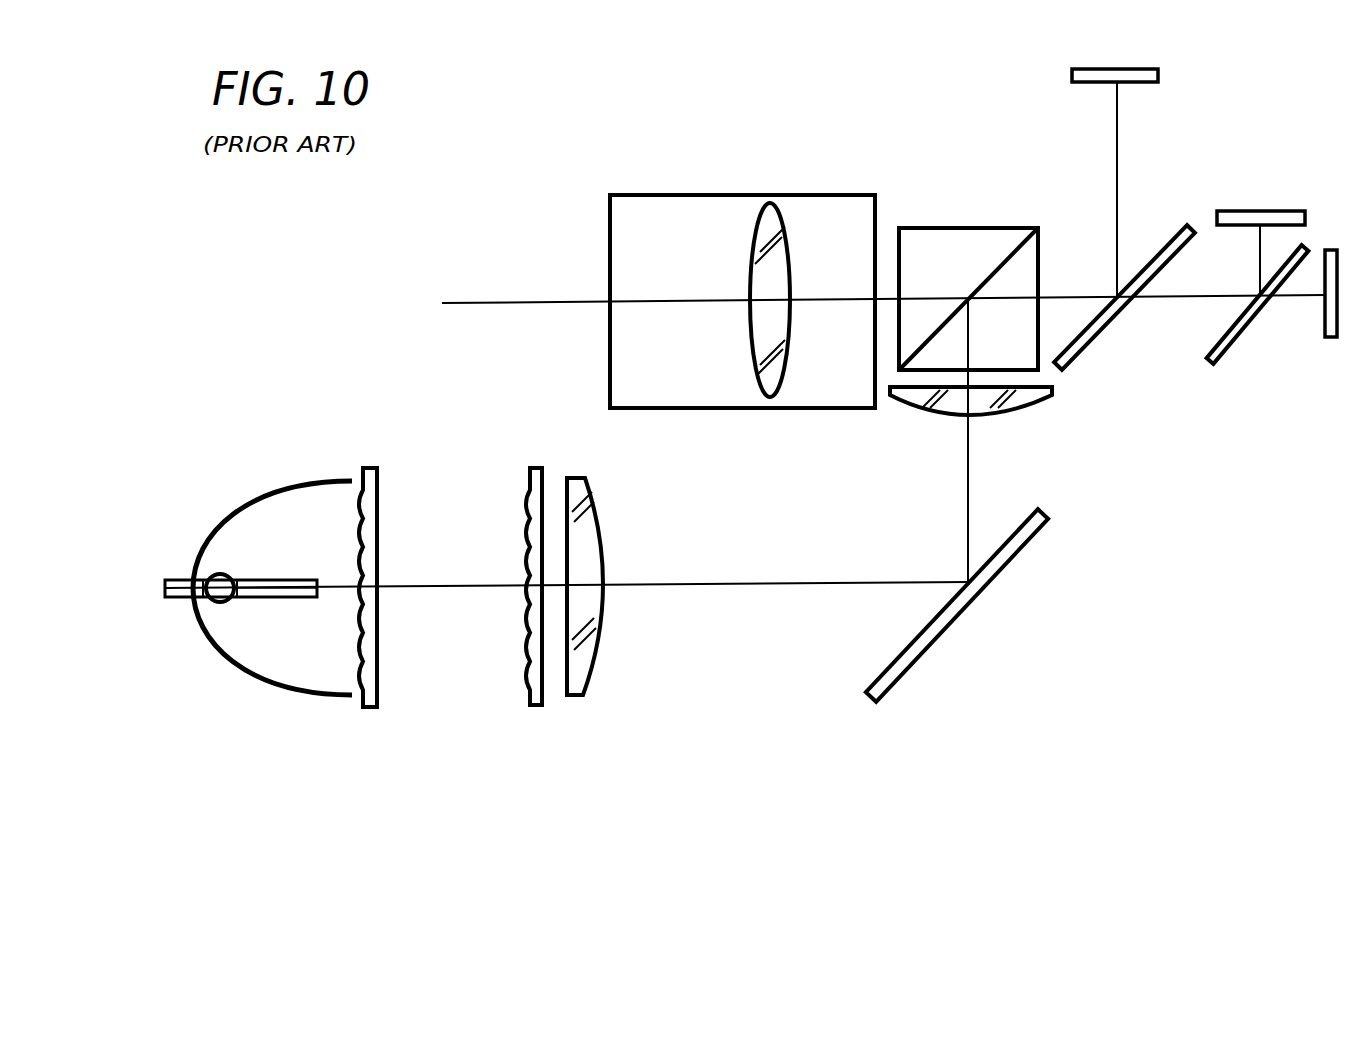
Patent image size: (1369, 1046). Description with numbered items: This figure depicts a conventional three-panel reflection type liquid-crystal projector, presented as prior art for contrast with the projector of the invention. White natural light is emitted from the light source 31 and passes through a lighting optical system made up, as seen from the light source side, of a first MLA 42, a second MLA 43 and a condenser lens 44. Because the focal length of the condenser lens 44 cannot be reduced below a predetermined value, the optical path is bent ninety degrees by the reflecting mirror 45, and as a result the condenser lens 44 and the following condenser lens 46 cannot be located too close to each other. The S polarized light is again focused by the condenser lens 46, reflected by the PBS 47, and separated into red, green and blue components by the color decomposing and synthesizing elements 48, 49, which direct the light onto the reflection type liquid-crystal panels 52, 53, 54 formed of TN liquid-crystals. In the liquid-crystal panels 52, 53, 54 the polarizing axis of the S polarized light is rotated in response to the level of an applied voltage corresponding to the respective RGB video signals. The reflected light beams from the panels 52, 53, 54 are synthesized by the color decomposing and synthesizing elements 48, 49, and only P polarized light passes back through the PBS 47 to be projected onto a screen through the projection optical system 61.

The light source 31 is at (248, 673).
The MLA 42 is at (377, 695).
The MLA 43 is at (536, 705).
The condenser lens 44 is at (573, 695).
The reflecting mirror 45 is at (1007, 567).
The condenser lens 46 is at (1000, 413).
The PBS 47 is at (937, 228).
The color decomposing and synthesizing element 48 is at (1175, 228).
The color decomposing and synthesizing element 49 is at (1207, 358).
The reflection type liquid-crystal panel 52 is at (1158, 76).
The reflection type liquid-crystal panel 53 is at (1249, 211).
The reflection type liquid-crystal panel 54 is at (1328, 337).
The projection optical system 61 is at (669, 195).